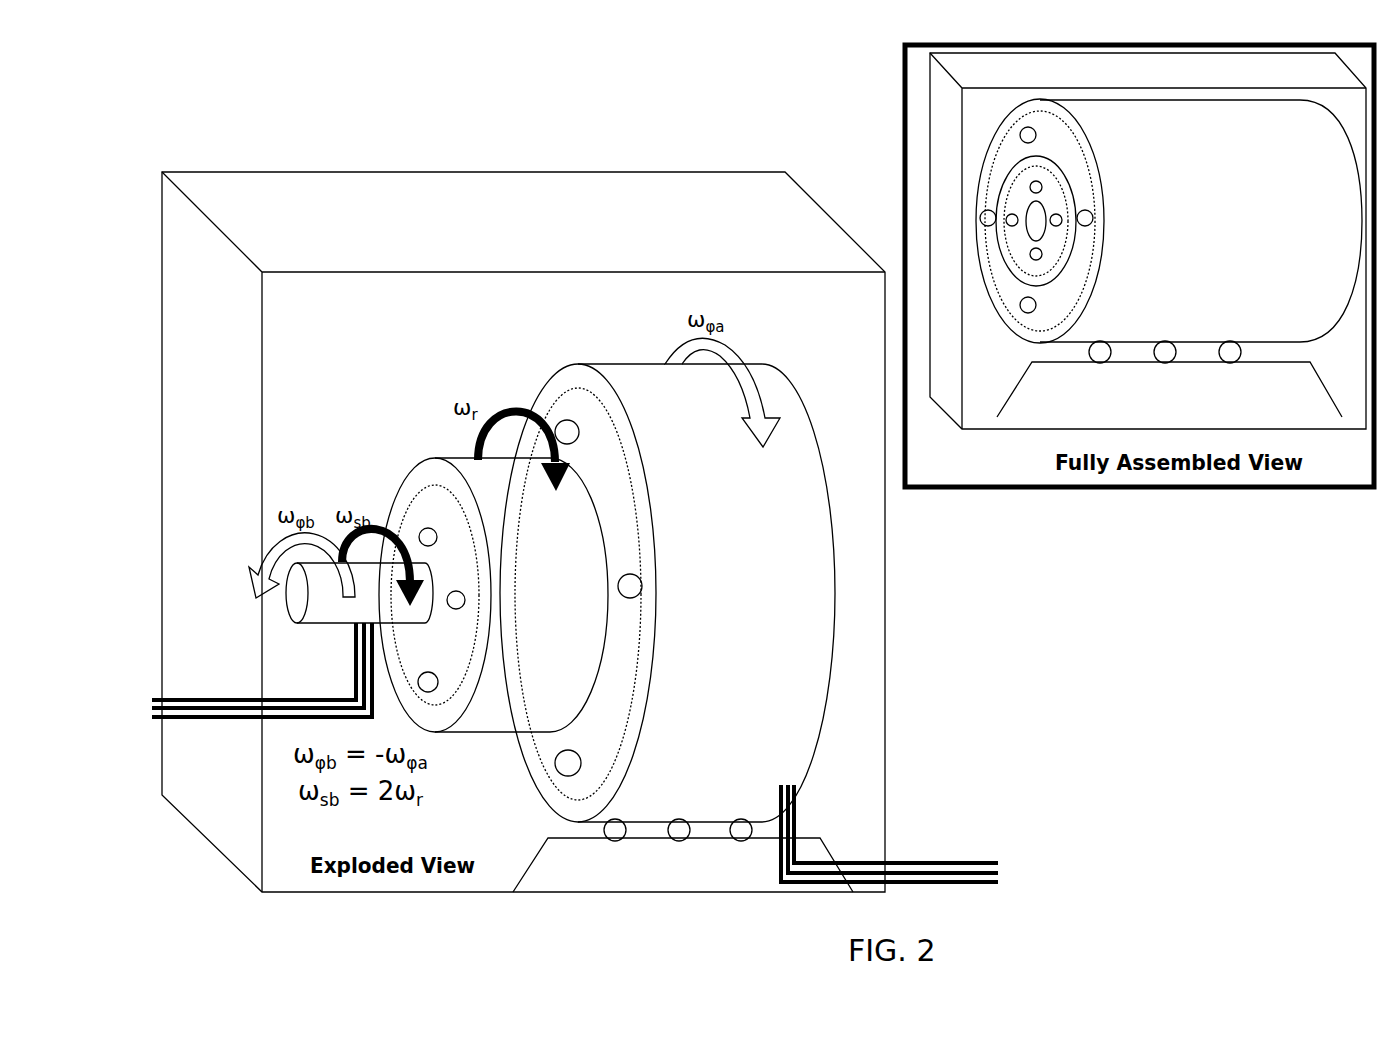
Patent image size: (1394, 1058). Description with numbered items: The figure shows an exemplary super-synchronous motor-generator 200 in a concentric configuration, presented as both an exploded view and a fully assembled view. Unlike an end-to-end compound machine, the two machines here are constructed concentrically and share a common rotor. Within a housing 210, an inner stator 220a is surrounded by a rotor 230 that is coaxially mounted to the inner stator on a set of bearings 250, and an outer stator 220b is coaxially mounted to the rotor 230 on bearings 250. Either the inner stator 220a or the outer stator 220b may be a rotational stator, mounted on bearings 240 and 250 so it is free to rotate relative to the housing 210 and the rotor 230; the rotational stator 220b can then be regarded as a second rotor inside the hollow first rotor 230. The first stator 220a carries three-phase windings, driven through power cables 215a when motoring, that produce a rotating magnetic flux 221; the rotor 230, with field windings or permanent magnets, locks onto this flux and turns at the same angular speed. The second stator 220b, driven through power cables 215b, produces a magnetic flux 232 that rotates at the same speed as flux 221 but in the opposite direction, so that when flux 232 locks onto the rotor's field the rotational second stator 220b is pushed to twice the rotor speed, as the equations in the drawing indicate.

The super-synchronous motor-generator 200 is at (325, 118).
The housing 210 is at (494, 202).
The power cables 215a is at (945, 860).
The power cables 215b is at (195, 718).
The inner stator 220a is at (532, 770).
The outer stator 220b is at (287, 612).
The rotating magnetic flux 221 is at (682, 345).
The rotor 230 is at (428, 483).
The rotational magnetic flux 232 is at (283, 538).
The bearings 240 is at (738, 820).
The bearings 250 is at (618, 587).